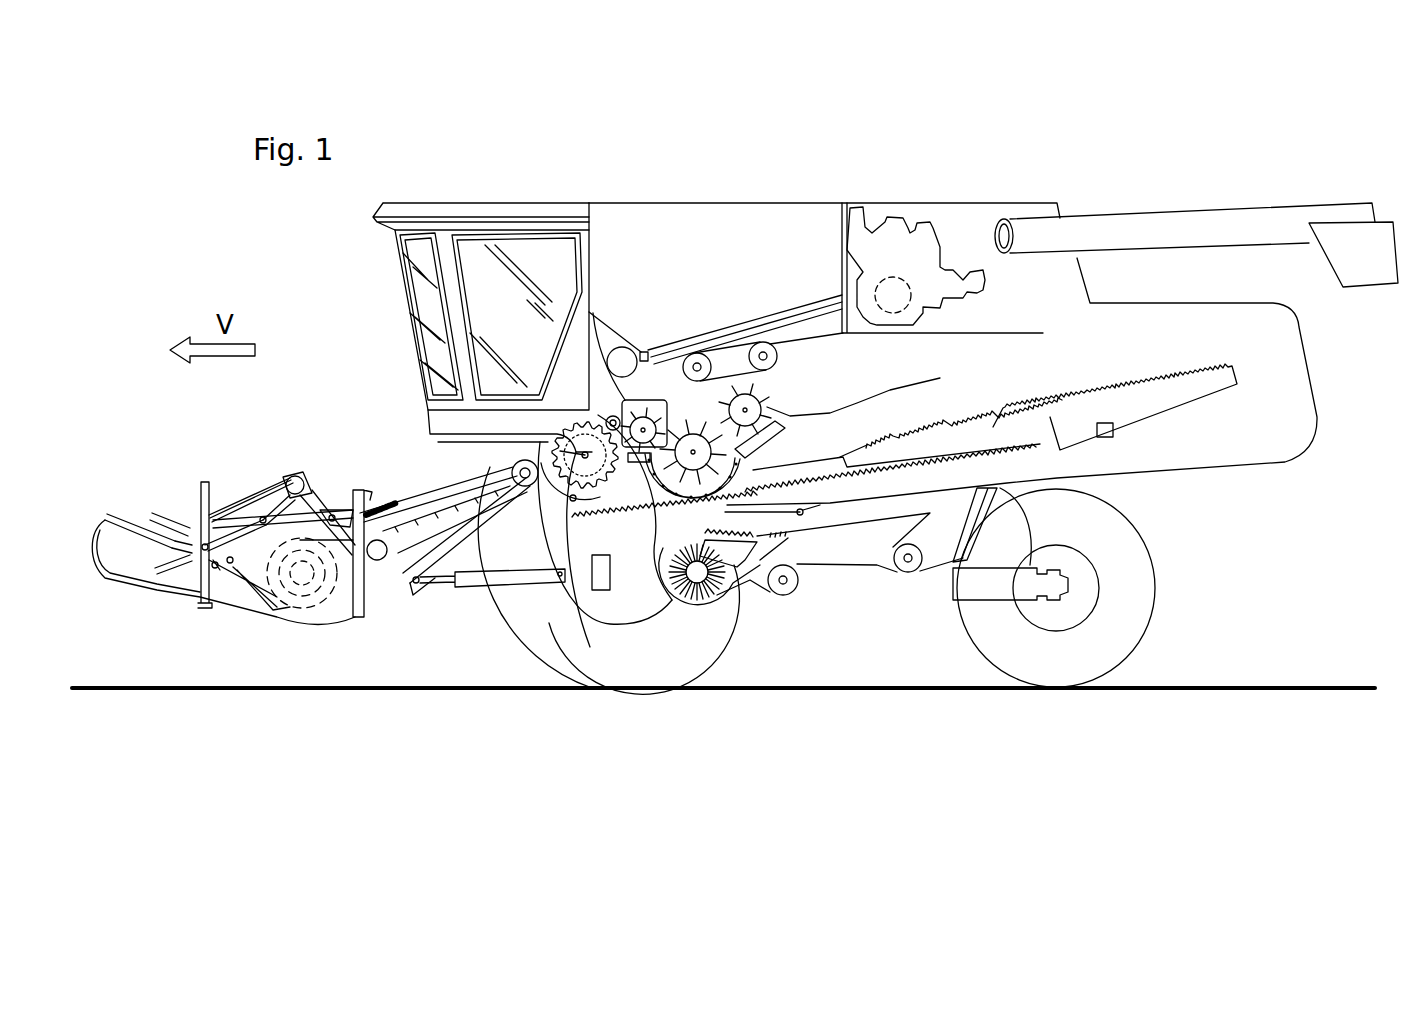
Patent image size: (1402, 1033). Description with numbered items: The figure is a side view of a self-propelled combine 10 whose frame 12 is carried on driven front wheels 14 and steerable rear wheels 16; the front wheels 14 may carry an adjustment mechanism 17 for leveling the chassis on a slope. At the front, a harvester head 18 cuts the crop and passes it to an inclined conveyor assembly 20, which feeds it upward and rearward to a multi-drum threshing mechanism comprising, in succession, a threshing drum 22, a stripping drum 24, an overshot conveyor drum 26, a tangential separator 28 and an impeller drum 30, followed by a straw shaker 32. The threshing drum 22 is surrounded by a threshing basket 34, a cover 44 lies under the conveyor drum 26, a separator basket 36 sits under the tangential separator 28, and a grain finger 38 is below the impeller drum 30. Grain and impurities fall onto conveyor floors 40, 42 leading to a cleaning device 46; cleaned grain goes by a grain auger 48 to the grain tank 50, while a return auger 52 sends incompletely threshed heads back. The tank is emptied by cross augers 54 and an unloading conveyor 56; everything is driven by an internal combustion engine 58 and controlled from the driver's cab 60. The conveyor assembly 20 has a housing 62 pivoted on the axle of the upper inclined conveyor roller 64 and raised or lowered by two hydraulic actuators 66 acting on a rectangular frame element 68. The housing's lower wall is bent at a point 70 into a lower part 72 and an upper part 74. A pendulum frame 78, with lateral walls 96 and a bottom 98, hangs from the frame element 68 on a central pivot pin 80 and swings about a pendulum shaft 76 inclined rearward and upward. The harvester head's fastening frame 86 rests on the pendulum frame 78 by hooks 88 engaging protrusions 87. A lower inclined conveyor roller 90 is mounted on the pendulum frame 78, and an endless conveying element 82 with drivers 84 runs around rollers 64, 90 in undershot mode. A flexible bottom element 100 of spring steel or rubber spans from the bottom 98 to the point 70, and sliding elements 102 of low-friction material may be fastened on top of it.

The combine 10 is at (748, 165).
The frame 12 is at (857, 600).
The front wheels 14 is at (660, 650).
The rear wheels 16 is at (1142, 607).
The adjustment mechanism 17 is at (600, 590).
The harvester head 18 is at (293, 610).
The inclined conveyor assembly 20 is at (424, 446).
The threshing drum 22 is at (420, 440).
The stripping drum 24 is at (633, 427).
The overshot operating conveyor drum 26 is at (630, 420).
The tangential separator 28 is at (690, 435).
The impeller drum 30 is at (765, 404).
The straw shaker 32 is at (993, 427).
The threshing basket 34 is at (683, 570).
The separator basket 36 is at (867, 445).
The grain finger 38 is at (832, 414).
The conveyor floor 40 is at (620, 517).
The conveyor floor 42 is at (977, 452).
The cover 44 is at (717, 610).
The cleaning device 46 is at (749, 610).
The grain auger 48 is at (787, 590).
The grain tank 50 is at (723, 253).
The return auger 52 is at (910, 572).
The cross augers 54 is at (763, 342).
The unloading conveyor 56 is at (1197, 222).
The internal combustion engine 58 is at (895, 215).
The driver's cab 60 is at (511, 312).
The housing 62 is at (545, 670).
The upper inclined conveyor roller 64 is at (515, 472).
The actuators 66 is at (1073, 587).
The rectangular frame element 68 is at (400, 587).
The point 70 is at (493, 582).
The lower part 72 is at (452, 578).
The upper part 74 is at (462, 497).
The pendulum shaft 76 is at (415, 560).
The pendulum frame 78 is at (295, 486).
The pivot pin 80 is at (378, 560).
The endless conveying element 82 is at (525, 620).
The drivers 84 is at (583, 513).
The fastening frame 86 is at (287, 487).
The protrusions 87 is at (357, 500).
The hooks 88 is at (365, 490).
The lower inclined conveyor roller 90 is at (338, 577).
The lateral walls 96 is at (343, 597).
The bottom 98 is at (380, 585).
The flexible bottom element 100 is at (420, 588).
The sliding elements 102 is at (455, 560).